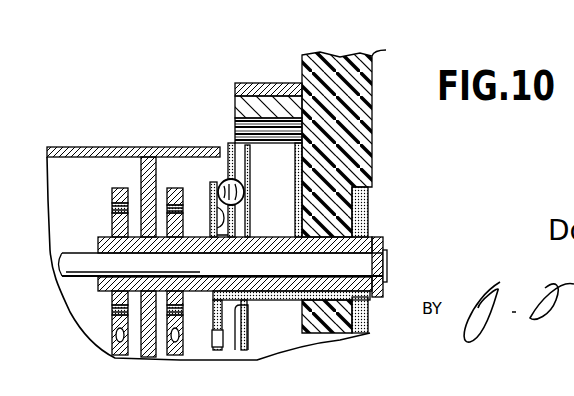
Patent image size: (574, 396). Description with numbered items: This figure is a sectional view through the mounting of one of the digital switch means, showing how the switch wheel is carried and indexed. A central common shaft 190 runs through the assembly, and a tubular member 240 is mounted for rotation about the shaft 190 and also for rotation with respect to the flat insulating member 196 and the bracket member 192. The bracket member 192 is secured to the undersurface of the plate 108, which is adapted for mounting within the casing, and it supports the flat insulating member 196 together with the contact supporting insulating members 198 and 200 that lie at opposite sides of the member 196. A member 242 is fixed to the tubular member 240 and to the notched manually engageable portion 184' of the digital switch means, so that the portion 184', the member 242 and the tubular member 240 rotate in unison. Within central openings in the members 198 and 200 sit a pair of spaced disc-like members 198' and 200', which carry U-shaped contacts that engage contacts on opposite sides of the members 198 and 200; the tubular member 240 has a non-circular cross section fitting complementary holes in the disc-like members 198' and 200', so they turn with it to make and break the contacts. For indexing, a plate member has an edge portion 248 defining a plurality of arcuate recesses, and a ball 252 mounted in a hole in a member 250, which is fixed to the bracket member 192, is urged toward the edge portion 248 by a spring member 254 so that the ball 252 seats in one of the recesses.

The plate 108 is at (62, 147).
The flat insulating member 196 is at (148, 157).
The contact supporting insulating member 198 is at (100, 232).
The disc-like member 198' is at (93, 278).
The contact supporting insulating member 200 is at (165, 214).
The disc-like member 200' is at (196, 284).
The edge portion 248 is at (228, 247).
The central common shaft 190 is at (64, 277).
The tubular member 240 is at (372, 236).
The manually engageable portion 184' is at (360, 180).
The member 242 is at (370, 203).
The spring member 254 is at (257, 143).
The bracket member 192 is at (222, 157).
The member 250 is at (250, 162).
The ball 252 is at (245, 192).